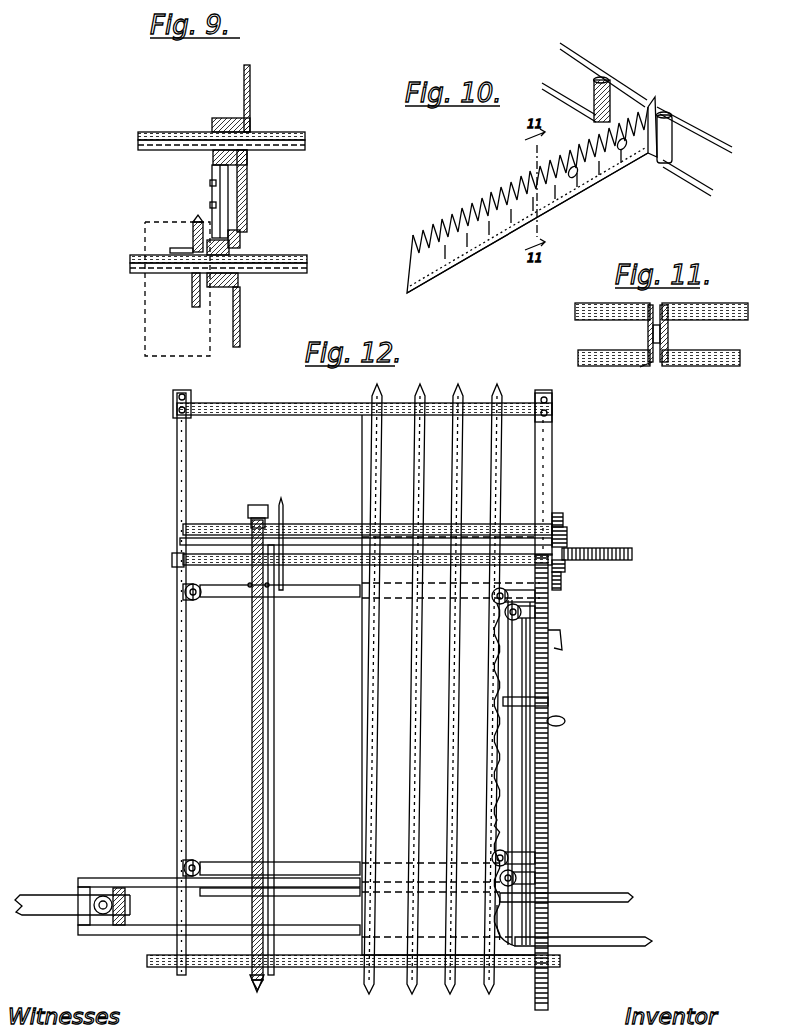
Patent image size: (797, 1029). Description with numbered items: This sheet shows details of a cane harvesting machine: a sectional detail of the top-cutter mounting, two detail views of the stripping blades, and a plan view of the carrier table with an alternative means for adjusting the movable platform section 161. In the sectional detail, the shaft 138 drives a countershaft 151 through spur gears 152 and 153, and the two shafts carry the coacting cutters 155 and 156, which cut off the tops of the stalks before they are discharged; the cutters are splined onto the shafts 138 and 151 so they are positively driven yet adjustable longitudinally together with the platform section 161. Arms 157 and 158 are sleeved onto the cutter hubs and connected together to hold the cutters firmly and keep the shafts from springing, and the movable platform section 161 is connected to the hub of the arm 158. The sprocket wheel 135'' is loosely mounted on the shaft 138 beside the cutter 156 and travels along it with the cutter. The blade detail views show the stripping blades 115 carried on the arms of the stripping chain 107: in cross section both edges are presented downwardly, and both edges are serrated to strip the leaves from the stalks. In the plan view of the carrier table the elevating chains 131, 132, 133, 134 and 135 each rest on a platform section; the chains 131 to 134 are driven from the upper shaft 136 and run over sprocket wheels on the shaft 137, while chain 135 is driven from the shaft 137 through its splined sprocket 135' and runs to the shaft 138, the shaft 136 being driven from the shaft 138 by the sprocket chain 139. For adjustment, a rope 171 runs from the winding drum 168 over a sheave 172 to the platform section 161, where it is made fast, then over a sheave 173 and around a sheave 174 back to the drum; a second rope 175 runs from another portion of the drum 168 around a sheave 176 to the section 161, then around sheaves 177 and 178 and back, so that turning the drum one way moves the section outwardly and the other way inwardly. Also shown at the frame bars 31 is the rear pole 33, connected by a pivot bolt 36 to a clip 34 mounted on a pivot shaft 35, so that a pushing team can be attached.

In FIG. 12, the frame bar / screw shaft 31 is at (178, 718).
In FIG. 12, the rear pole 33 is at (42, 895).
In FIG. 12, the clip 34 is at (116, 935).
In FIG. 12, the pivot shaft 35 is at (122, 878).
In FIG. 12, the pivot bolt 36 is at (103, 895).
In FIG. 10, the stripping chain 107 is at (676, 175).
In FIG. 11, the stripping chain 107 is at (715, 366).
In FIG. 10, the stripping blade 115 is at (567, 182).
In FIG. 11, the stripping blade 115 is at (665, 364).
In FIG. 12, the elevating chain 131 is at (492, 462).
In FIG. 12, the elevating chain 132 is at (455, 462).
In FIG. 12, the elevating chain 133 is at (416, 462).
In FIG. 12, the elevating chain 134 is at (372, 466).
In FIG. 12, the sprocket chain 135 is at (230, 755).
In FIG. 12, the sprocket 135' is at (239, 997).
In FIG. 9, the sprocket wheel 135'' is at (154, 260).
In FIG. 12, the sprocket wheel 135'' is at (271, 501).
In FIG. 12, the upper shaft 136 is at (270, 415).
In FIG. 12, the shaft 137 is at (302, 968).
In FIG. 9, the shaft 138 is at (308, 266).
In FIG. 12, the shaft 138 is at (229, 524).
In FIG. 12, the sprocket chain 139 is at (550, 477).
In FIG. 9, the countershaft 151 is at (305, 145).
In FIG. 12, the countershaft 151 is at (567, 567).
In FIG. 12, the spur gear 152 is at (560, 590).
In FIG. 12, the spur gear 153 is at (562, 518).
In FIG. 9, the cutter 155 is at (251, 90).
In FIG. 12, the cutter 155 is at (283, 568).
In FIG. 9, the cutter 156 is at (243, 226).
In FIG. 12, the cutter 156 is at (286, 515).
In FIG. 9, the arm 157 is at (215, 172).
In FIG. 9, the arm 158 is at (221, 222).
In FIG. 9, the movable platform section 161 is at (148, 328).
In FIG. 12, the movable platform section 161 is at (275, 728).
In FIG. 12, the winding drum 168 is at (550, 720).
In FIG. 12, the rope 171 is at (312, 862).
In FIG. 12, the sheave 172 is at (509, 887).
In FIG. 12, the sheave 173 is at (194, 860).
In FIG. 12, the sheave 174 is at (494, 856).
In FIG. 12, the rope 175 is at (215, 597).
In FIG. 12, the sheave 176 is at (497, 615).
In FIG. 12, the sheave 177 is at (200, 602).
In FIG. 12, the sheave 178 is at (563, 634).